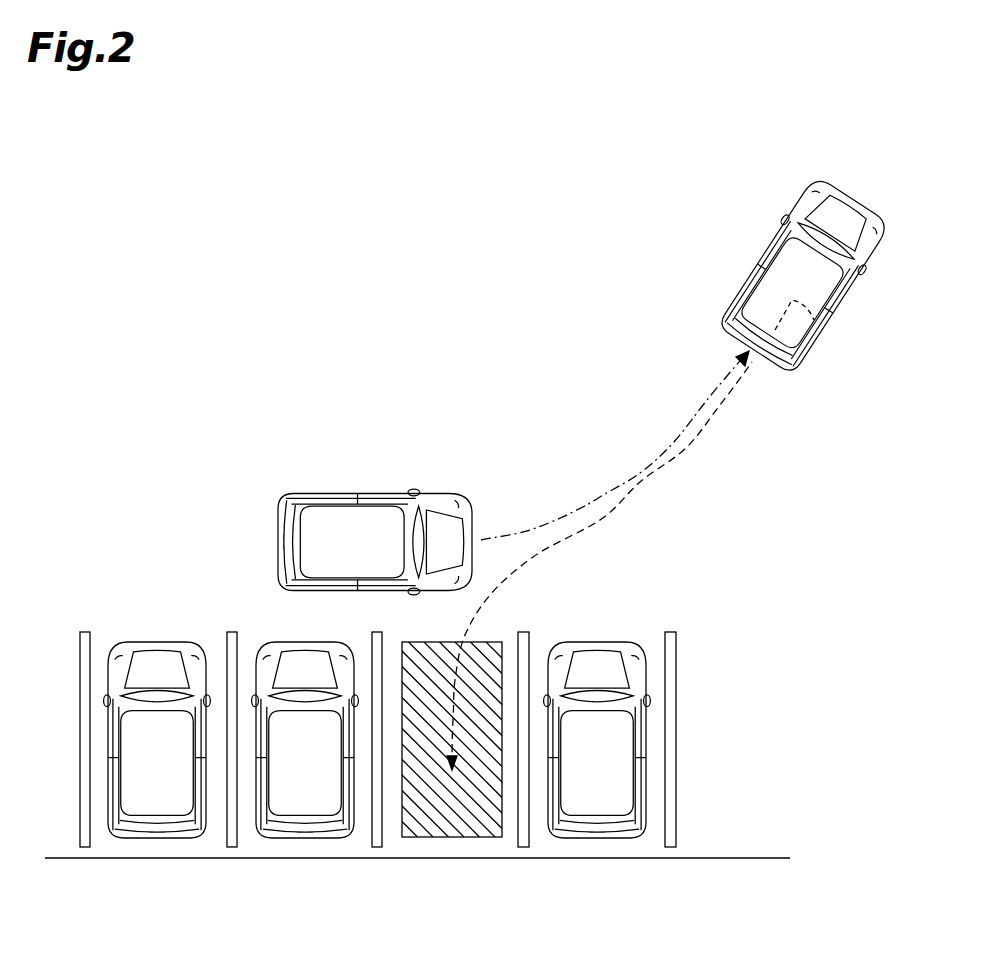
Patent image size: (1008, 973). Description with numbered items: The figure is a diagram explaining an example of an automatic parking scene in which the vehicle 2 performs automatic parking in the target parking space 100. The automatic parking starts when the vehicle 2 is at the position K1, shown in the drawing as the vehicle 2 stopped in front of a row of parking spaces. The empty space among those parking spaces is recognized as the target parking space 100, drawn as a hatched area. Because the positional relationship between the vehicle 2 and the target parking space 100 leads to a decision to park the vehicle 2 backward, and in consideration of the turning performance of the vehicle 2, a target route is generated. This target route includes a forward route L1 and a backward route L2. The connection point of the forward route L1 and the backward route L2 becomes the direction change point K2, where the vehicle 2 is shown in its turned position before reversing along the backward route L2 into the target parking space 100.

The vehicle 2 is at (318, 494).
The position K1 is at (358, 537).
The direction change point K2 is at (820, 333).
The forward route L1 is at (595, 500).
The backward route L2 is at (628, 503).
The target parking space 100 is at (494, 838).